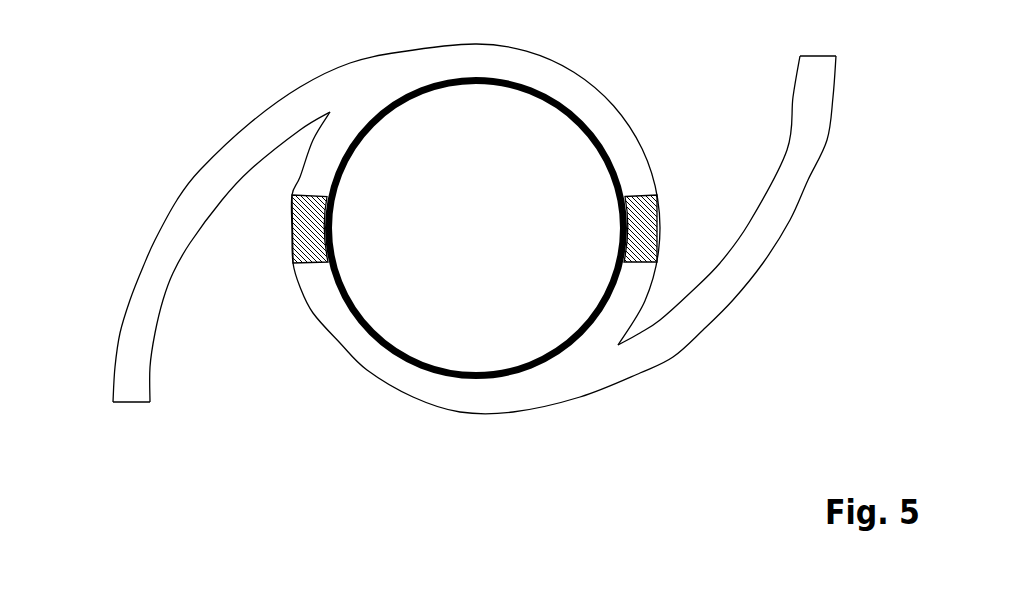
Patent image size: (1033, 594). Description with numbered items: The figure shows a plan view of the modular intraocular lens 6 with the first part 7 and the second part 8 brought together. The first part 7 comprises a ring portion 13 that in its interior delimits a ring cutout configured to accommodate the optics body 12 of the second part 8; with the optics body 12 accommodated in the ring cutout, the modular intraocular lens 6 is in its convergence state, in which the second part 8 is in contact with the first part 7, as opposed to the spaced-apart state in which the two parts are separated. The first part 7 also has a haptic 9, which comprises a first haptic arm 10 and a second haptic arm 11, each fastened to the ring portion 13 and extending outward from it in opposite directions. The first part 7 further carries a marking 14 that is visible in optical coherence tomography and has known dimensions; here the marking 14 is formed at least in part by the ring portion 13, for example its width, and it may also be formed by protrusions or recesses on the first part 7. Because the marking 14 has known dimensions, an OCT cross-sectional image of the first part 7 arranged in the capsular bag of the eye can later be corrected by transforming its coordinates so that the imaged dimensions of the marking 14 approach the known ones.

The modular intraocular lens 6 is at (801, 382).
The first part 7 is at (781, 302).
The second part 8 is at (452, 249).
The haptic 9 is at (477, 267).
The first haptic arm 10 is at (150, 258).
The second haptic arm 11 is at (803, 170).
The optics body 12 is at (403, 323).
The ring portion 13 is at (464, 403).
The marking 14 is at (297, 223).